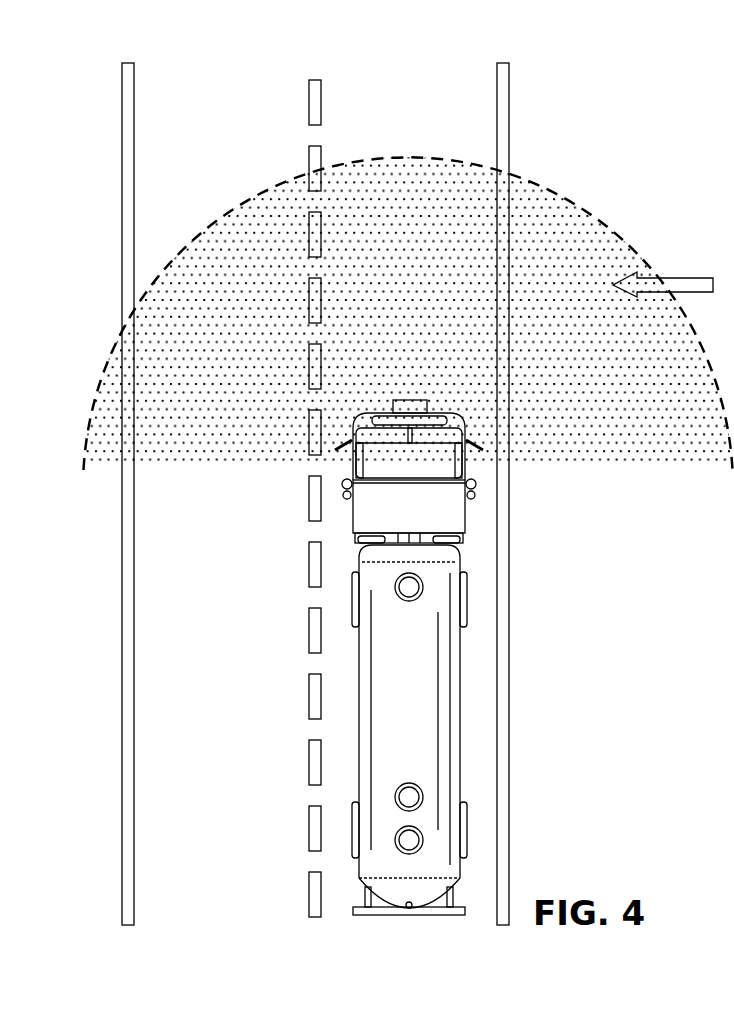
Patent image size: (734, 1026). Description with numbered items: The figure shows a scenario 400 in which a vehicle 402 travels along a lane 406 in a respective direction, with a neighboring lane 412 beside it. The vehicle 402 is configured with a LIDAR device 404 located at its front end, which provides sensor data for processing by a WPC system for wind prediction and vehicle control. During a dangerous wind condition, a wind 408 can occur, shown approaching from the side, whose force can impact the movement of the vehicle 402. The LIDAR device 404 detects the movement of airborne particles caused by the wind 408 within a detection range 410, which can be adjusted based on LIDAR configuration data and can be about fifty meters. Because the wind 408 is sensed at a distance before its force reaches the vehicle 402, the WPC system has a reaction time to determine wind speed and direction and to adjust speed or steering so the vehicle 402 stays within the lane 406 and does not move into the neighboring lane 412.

The scenario 400 is at (610, 104).
The vehicle 402 is at (460, 710).
The LIDAR device 404 is at (411, 399).
The lane 406 is at (321, 57).
The wind 408 is at (684, 277).
The detection range 410 is at (552, 192).
The neighboring lane 412 is at (135, 57).